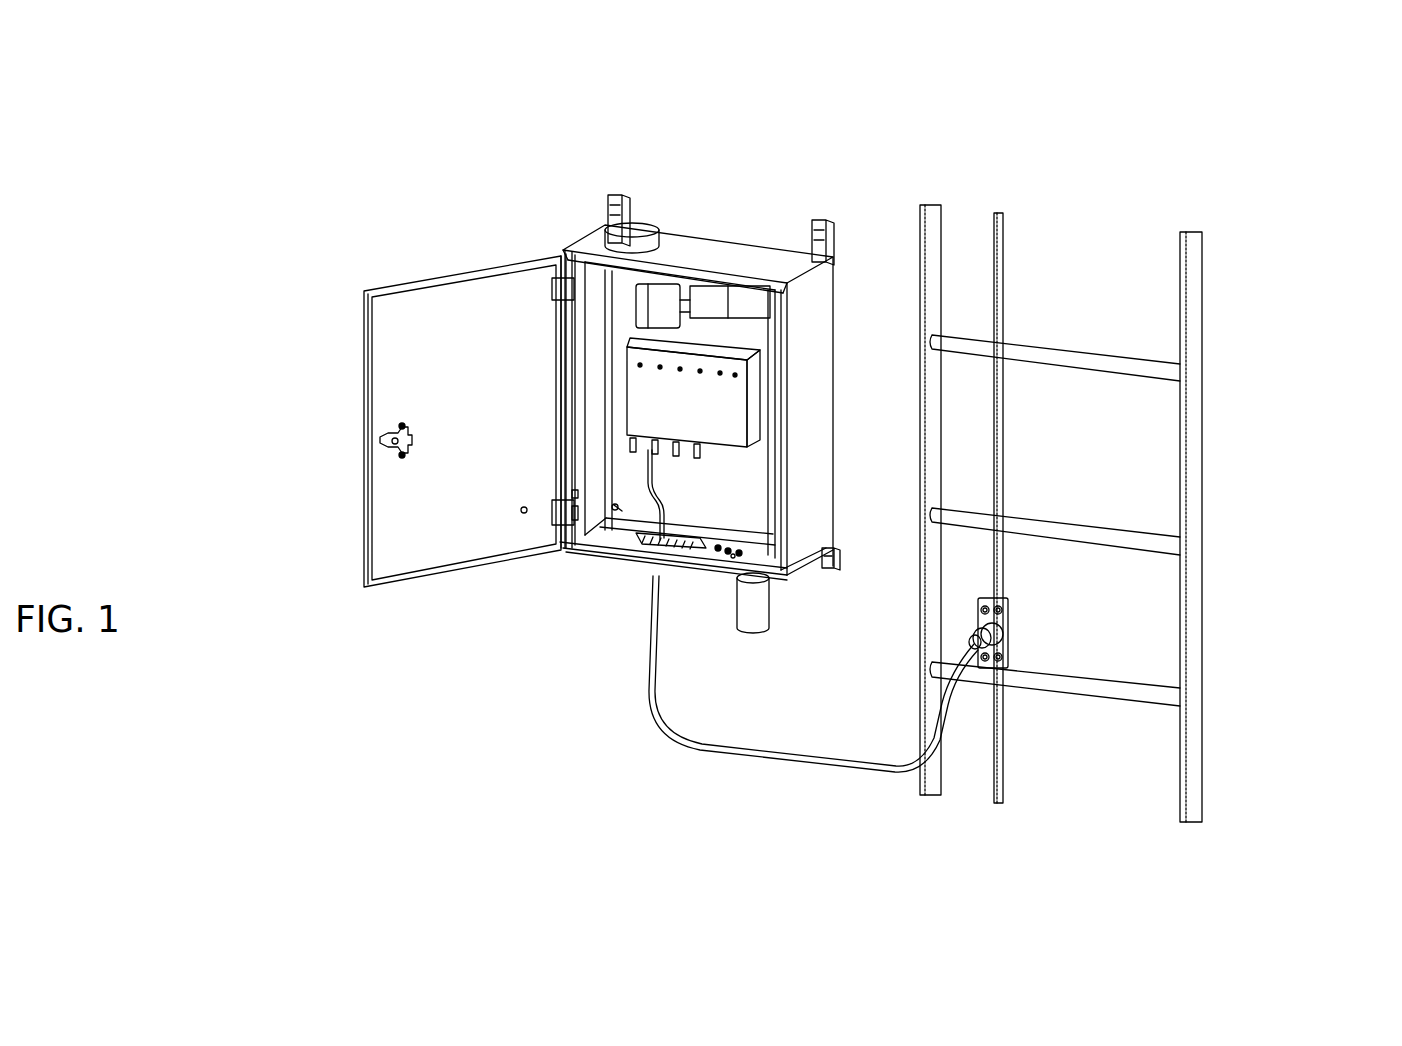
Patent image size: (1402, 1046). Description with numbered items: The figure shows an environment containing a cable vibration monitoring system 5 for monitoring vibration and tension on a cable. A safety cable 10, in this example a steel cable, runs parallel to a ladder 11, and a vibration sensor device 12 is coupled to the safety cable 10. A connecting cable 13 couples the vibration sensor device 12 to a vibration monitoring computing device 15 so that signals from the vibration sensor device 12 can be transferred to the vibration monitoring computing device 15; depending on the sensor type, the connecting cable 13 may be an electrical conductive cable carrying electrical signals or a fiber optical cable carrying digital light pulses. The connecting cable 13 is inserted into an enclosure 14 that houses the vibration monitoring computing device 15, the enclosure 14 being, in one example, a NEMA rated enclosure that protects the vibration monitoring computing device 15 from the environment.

The cable vibration monitoring system 5 is at (155, 82).
The safety cable 10 is at (1020, 277).
The ladder 11 is at (1218, 317).
The vibration sensor device 12 is at (1028, 628).
The connecting cable 13 is at (698, 772).
The enclosure 14 is at (600, 575).
The vibration monitoring computing device 15 is at (628, 392).